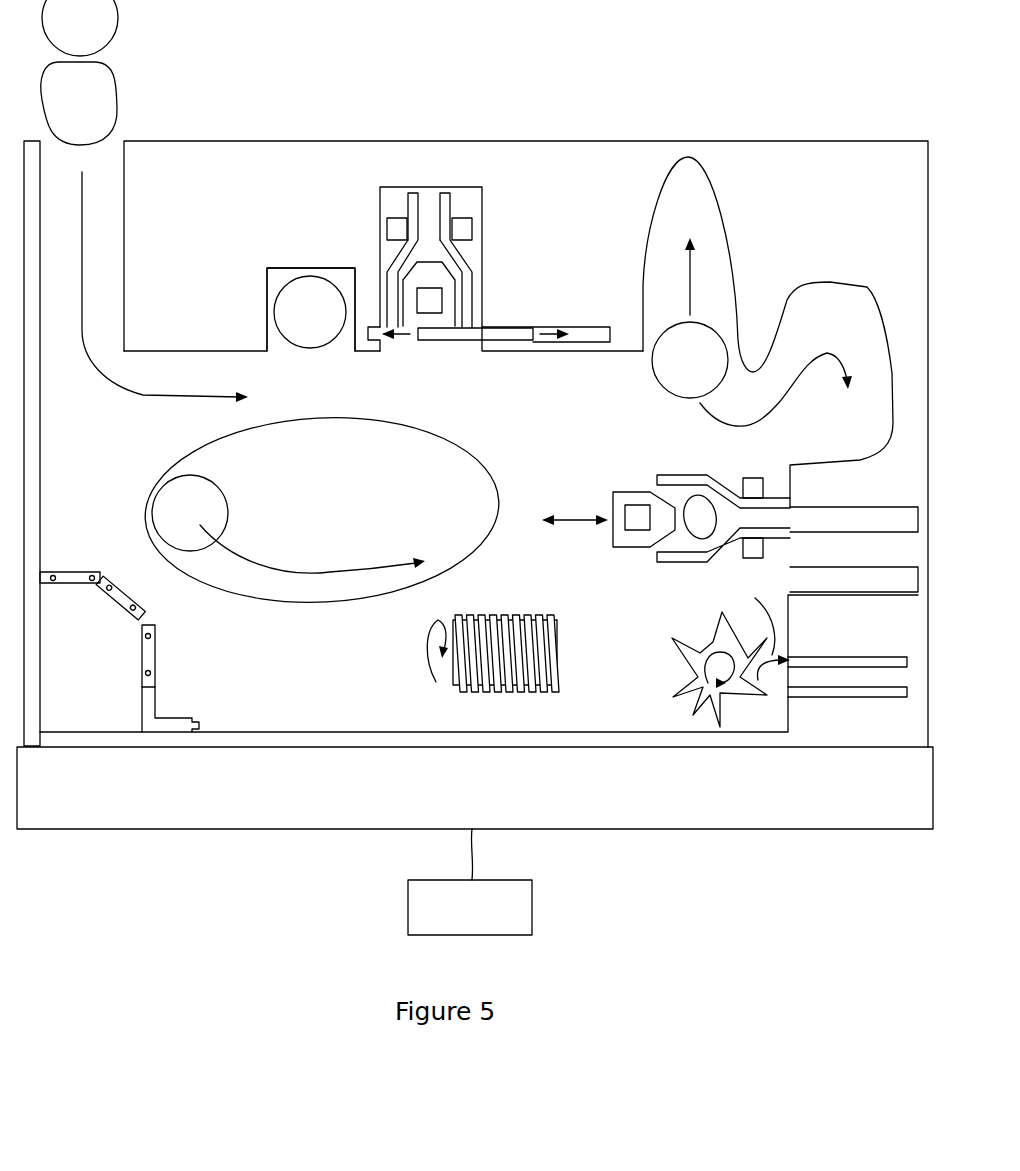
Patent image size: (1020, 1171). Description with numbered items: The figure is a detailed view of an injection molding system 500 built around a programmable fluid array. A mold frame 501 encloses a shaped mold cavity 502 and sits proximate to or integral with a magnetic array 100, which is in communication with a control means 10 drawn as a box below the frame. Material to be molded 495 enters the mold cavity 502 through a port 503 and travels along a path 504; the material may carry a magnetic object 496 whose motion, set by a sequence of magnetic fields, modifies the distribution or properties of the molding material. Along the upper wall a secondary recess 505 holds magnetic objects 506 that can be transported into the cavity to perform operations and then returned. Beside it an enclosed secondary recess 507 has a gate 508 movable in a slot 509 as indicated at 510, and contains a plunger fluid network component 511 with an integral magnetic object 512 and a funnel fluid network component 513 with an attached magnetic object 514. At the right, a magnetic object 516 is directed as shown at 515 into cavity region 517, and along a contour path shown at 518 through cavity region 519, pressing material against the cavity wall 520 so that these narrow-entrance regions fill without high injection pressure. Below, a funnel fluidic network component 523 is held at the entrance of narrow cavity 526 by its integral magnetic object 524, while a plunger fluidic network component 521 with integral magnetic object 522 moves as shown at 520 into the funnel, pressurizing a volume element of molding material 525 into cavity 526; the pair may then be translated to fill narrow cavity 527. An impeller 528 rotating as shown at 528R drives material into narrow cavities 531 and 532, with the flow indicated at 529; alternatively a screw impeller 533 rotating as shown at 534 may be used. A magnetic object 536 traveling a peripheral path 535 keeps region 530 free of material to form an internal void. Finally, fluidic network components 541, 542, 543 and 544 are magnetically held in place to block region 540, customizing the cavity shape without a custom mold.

The control means 10 is at (470, 882).
The magnetic array 100 is at (475, 788).
The material to be molded 495 is at (79, 103).
The magnetic object 496 is at (80, 28).
The injection molding system 500 is at (708, 880).
The mold frame 501 is at (243, 208).
The mold cavity 502 is at (550, 450).
The port 503 is at (84, 136).
The path 504 is at (143, 396).
The secondary recess 505 is at (276, 282).
The magnetic objects 506 is at (310, 312).
The enclosed secondary recess 507 is at (388, 208).
The gate 508 is at (490, 327).
The slot 509 is at (573, 326).
The gate movement 510 is at (550, 340).
The plunger fluid network component 511 is at (421, 273).
The integral magnetic object 512 is at (427, 313).
The funnel fluid network component 513 is at (448, 212).
The attached magnetic object 514 is at (462, 231).
The magnetic object direction into cavity 515 is at (692, 281).
The magnetic object 516 is at (690, 360).
The cavity region 517 is at (717, 230).
The magnetic object path 518 is at (779, 413).
The cavity region 519 is at (855, 338).
The cavity wall 520 is at (847, 282).
The plunger fluidic network component 521 is at (633, 547).
The integral magnetic object 522 is at (637, 506).
The funnel fluidic network component 523 is at (685, 477).
The integral magnetic object 524 is at (758, 477).
The volume element of molding material 525 is at (706, 535).
The narrow cavity 526 is at (868, 515).
The narrow cavity 527 is at (877, 575).
The impeller 528 is at (700, 670).
The impeller rotation 528R is at (703, 698).
The flow path 529 is at (746, 634).
The internal void region 530 is at (343, 503).
The narrow cavity 531 is at (875, 657).
The narrow cavity 532 is at (870, 697).
The screw impeller 533 is at (515, 690).
The screw impeller rotation 534 is at (427, 651).
The peripheral path 535 is at (318, 570).
The magnetic object 536 is at (190, 513).
The region of mold cavity 540 is at (107, 681).
The fluidic network component 541 is at (54, 571).
The fluidic network component 542 is at (130, 600).
The fluidic network component 543 is at (157, 652).
The fluidic network component 544 is at (157, 703).